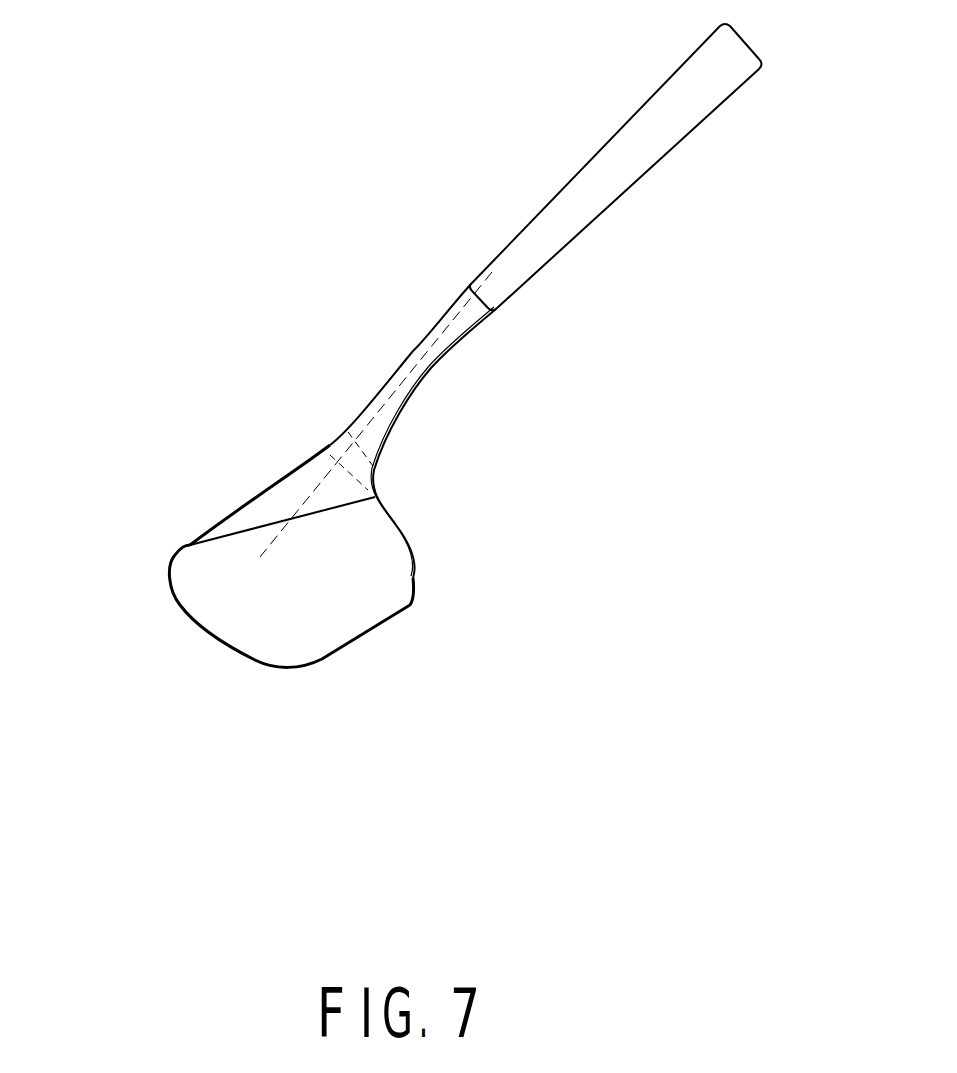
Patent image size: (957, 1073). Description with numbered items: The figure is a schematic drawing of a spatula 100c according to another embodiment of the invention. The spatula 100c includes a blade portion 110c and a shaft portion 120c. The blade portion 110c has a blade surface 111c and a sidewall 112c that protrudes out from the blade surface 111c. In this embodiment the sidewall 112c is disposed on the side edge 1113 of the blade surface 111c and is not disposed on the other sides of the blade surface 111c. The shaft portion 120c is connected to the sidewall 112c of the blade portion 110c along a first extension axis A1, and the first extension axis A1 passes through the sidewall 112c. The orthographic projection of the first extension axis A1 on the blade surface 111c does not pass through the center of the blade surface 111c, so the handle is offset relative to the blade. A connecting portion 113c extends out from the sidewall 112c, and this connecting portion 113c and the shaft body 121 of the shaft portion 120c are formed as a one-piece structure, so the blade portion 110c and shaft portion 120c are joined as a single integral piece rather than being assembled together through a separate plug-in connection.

The spatula 100c is at (142, 52).
The blade portion 110c is at (264, 547).
The blade surface 111c is at (343, 612).
The sidewall 112c is at (278, 497).
The side edge 1113 is at (223, 537).
The connecting portion 113c is at (412, 389).
The shaft portion 120c is at (528, 172).
The shaft body 121 is at (423, 370).
The first extension axis A1 is at (461, 310).